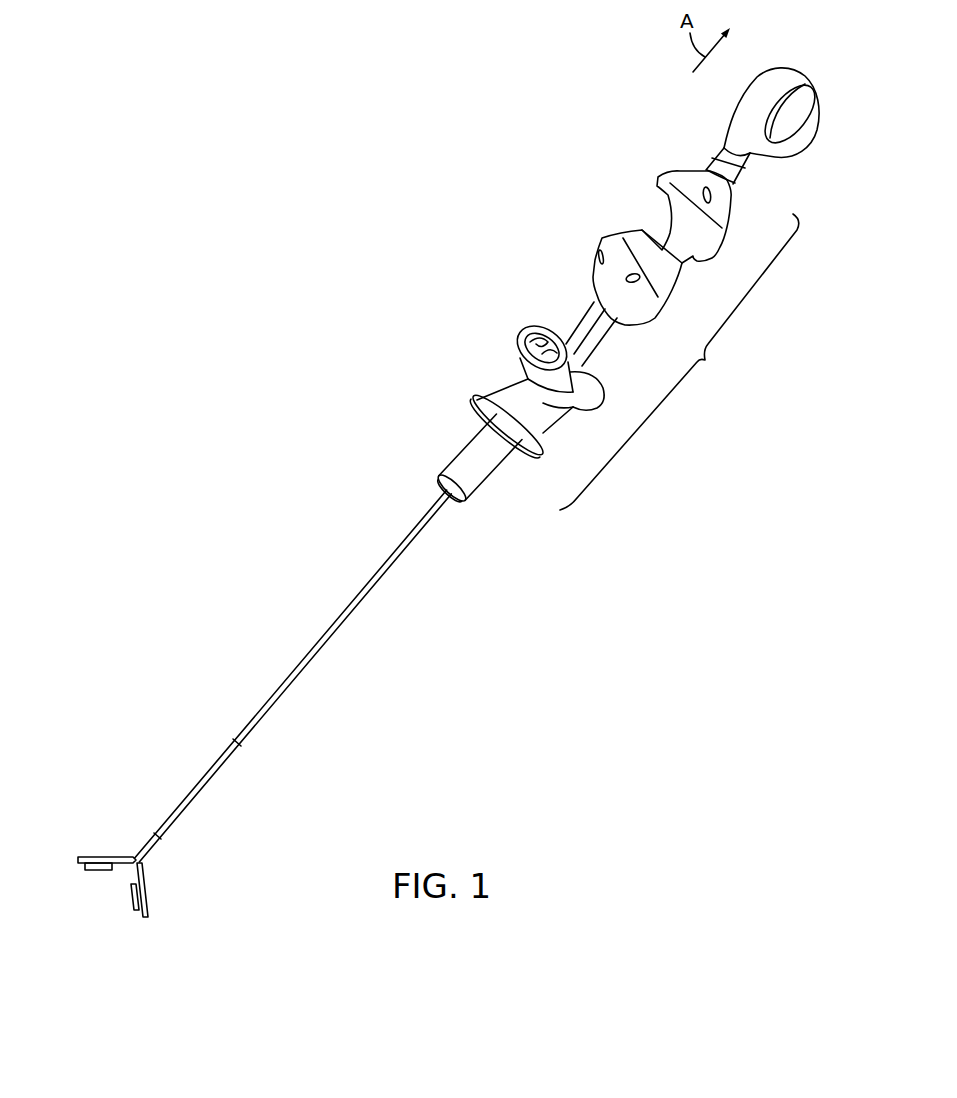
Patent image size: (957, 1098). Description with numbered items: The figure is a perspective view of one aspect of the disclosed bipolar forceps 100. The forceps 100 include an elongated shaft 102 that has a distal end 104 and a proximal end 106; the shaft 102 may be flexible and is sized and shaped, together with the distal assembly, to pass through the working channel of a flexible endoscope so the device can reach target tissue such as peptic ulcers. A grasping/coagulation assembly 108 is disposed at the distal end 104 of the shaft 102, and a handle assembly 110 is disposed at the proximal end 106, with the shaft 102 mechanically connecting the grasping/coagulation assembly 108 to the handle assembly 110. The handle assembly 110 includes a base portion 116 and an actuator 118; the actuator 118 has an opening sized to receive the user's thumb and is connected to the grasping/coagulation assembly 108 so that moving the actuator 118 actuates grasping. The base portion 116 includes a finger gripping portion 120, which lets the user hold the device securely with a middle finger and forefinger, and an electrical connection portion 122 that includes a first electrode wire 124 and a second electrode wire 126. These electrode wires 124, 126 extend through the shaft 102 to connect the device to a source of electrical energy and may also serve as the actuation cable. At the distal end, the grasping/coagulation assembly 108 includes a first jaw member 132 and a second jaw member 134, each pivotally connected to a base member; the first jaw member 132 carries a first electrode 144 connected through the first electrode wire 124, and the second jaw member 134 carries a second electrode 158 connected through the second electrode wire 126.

The bipolar forceps 100 is at (470, 481).
The elongated shaft 102 is at (320, 636).
The distal end 104 is at (228, 815).
The proximal end 106 is at (476, 501).
The grasping/coagulation assembly 108 is at (123, 841).
The handle assembly 110 is at (683, 265).
The base portion 116 is at (679, 362).
The actuator 118 is at (782, 70).
The finger gripping portion 120 is at (647, 228).
The electrical connection portion 122 is at (520, 366).
The first electrode wire 124 is at (550, 352).
The second electrode wire 126 is at (536, 345).
The first jaw member 132 is at (108, 857).
The second jaw member 134 is at (147, 893).
The first electrode 144 is at (102, 873).
The second electrode 158 is at (133, 908).